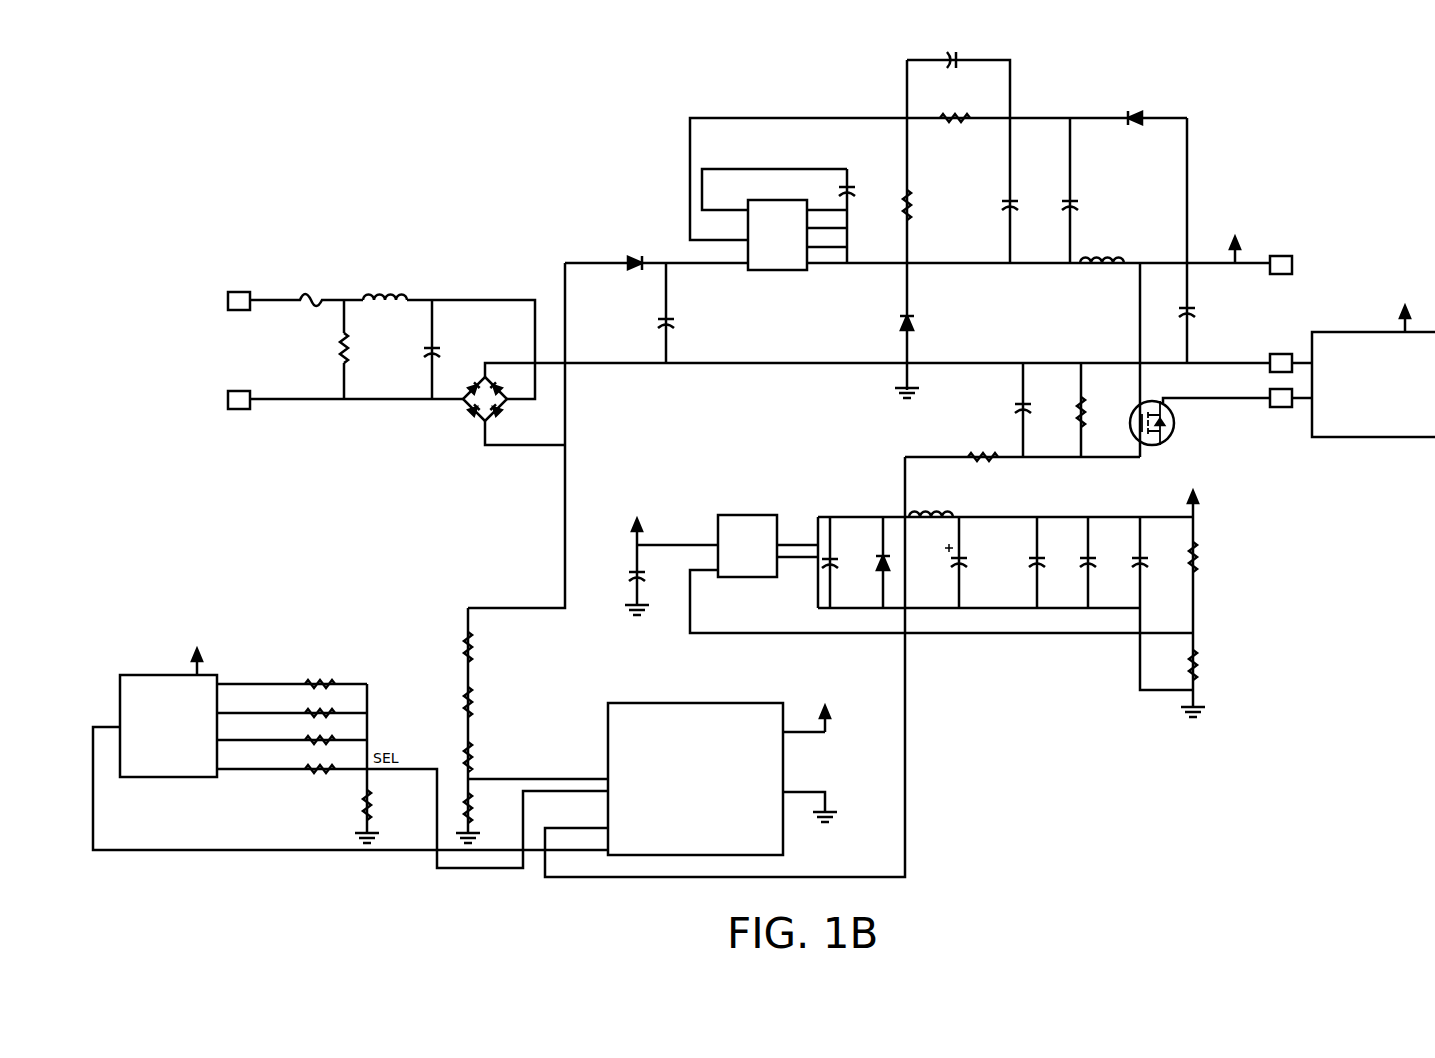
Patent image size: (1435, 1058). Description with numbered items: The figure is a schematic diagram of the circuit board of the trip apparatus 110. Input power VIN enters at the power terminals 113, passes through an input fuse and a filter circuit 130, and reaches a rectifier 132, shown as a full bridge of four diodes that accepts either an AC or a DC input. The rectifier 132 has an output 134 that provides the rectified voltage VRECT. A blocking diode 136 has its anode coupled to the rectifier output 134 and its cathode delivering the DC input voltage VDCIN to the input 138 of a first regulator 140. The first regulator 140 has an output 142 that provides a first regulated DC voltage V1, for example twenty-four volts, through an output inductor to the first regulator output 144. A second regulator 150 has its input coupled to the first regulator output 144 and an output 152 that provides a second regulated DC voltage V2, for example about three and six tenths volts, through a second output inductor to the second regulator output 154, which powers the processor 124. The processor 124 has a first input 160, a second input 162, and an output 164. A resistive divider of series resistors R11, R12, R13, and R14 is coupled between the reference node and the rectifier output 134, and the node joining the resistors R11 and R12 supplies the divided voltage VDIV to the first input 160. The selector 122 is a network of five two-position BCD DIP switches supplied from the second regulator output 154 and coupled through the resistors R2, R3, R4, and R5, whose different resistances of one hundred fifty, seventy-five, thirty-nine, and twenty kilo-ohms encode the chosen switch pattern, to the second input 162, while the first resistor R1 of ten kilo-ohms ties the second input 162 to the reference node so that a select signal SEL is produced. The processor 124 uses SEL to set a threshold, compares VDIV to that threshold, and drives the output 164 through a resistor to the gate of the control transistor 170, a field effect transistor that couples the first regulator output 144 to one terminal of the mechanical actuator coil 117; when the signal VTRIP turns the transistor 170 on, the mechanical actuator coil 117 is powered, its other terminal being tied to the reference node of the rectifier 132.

The trip apparatus 110 is at (355, 162).
The power terminals 113 is at (217, 298).
The mechanical actuator coil 117 is at (1374, 332).
The selector 122 is at (167, 675).
The processor 124 is at (695, 779).
The filter circuit 130 is at (412, 257).
The rectifier 132 is at (458, 428).
The rectifier output 134 is at (492, 445).
The blocking diode 136 is at (628, 258).
The first regulator input 138 is at (682, 263).
The first regulator 140 is at (783, 200).
The first regulator output node 142 is at (974, 263).
The first regulator output 144 is at (1256, 263).
The second regulator 150 is at (744, 515).
The second regulator output node 152 is at (851, 517).
The second regulator output 154 is at (1171, 517).
The first input of the processor 160 is at (554, 777).
The second input of the processor 162 is at (487, 871).
The output of the processor 164 is at (570, 876).
The control transistor 170 is at (1174, 428).
The first resistor R1 is at (362, 807).
The second resistor R2 is at (304, 682).
The third resistor R3 is at (304, 711).
The fourth resistor R4 is at (304, 738).
The fifth resistor R5 is at (304, 766).
The divider resistor R11 is at (472, 805).
The divider resistor R12 is at (464, 750).
The divider resistor R13 is at (464, 697).
The divider resistor R14 is at (464, 642).